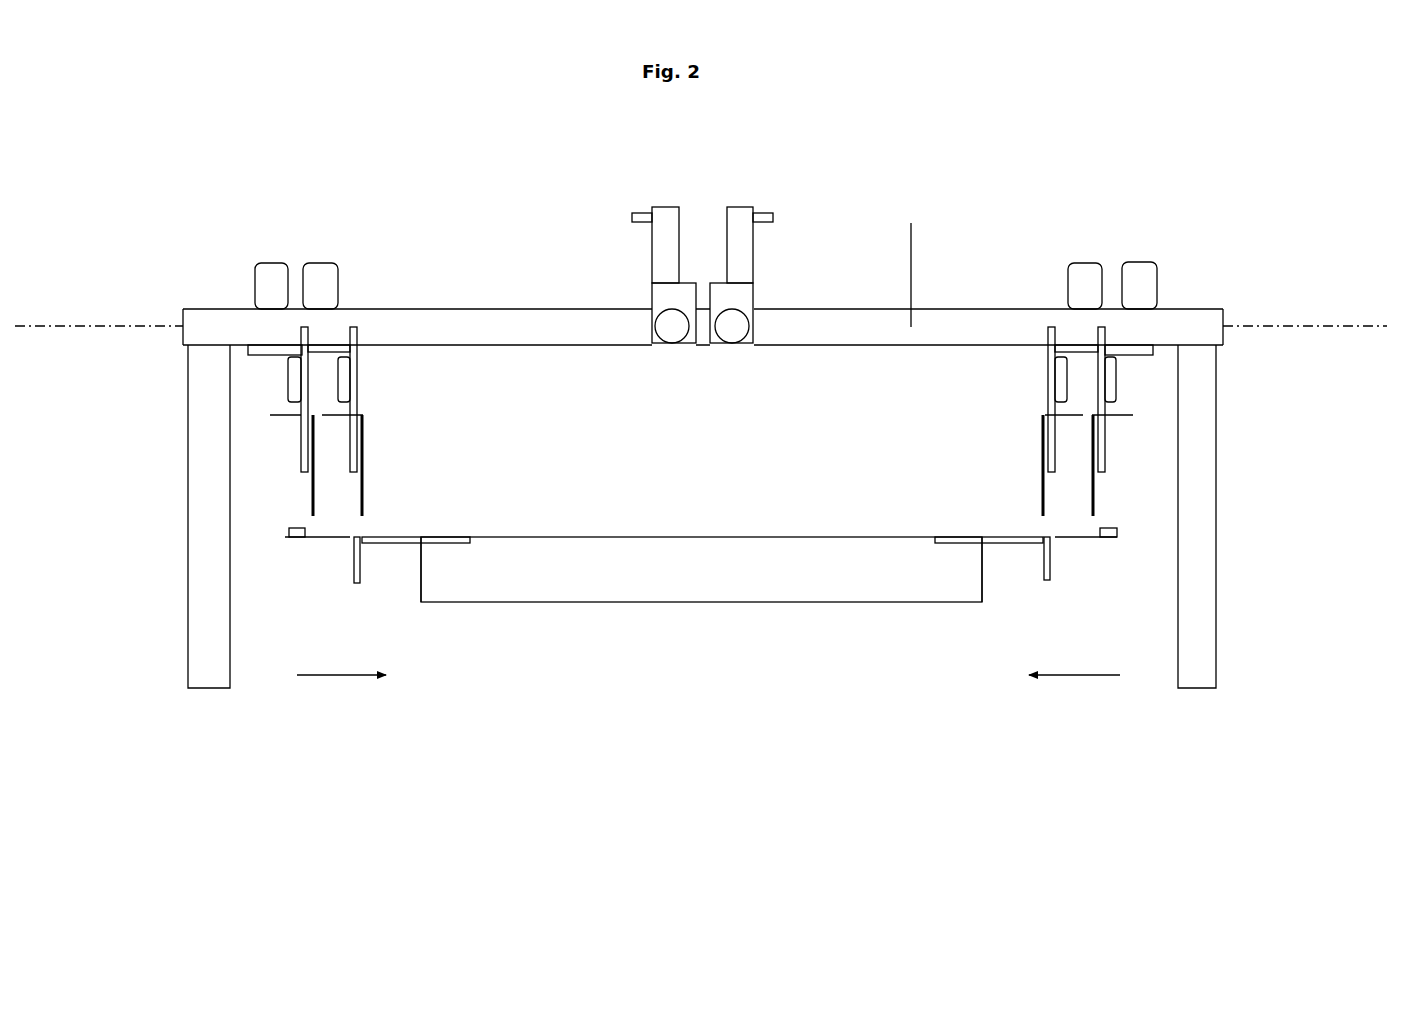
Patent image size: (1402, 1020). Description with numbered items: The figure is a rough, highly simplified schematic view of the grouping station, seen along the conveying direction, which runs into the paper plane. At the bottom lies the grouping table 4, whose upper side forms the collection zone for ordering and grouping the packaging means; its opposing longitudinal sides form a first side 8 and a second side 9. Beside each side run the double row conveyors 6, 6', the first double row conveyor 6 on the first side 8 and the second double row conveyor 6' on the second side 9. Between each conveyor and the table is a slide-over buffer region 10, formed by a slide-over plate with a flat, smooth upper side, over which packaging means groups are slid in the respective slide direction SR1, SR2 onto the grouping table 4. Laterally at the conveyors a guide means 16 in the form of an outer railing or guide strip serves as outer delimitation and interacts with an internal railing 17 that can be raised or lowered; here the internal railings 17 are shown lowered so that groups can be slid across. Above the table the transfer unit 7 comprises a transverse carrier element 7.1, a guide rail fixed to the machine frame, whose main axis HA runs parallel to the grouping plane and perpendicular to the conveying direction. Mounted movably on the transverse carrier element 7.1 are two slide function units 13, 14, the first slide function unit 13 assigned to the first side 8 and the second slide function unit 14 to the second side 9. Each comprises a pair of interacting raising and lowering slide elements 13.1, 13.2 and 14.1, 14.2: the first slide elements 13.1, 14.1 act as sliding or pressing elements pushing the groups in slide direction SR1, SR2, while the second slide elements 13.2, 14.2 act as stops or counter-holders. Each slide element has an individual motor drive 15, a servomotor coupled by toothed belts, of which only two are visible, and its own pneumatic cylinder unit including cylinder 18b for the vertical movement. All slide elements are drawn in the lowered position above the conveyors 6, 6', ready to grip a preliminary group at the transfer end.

The grouping table 4 is at (714, 581).
The first double row conveyor 6 is at (317, 565).
The second double row conveyor 6' is at (1086, 566).
The transfer unit 7 is at (434, 272).
The transverse carrier element 7.1 is at (910, 265).
The first side 8 is at (417, 586).
The second side 9 is at (989, 586).
The slide-over buffer region 10 is at (400, 540).
The first slide function unit 13 is at (376, 421).
The first slide element 13.1 is at (305, 429).
The second slide element 13.2 is at (357, 431).
The second slide function unit 14 is at (1005, 426).
The first slide element 14.1 is at (1105, 447).
The second slide element 14.2 is at (1045, 434).
The motor drive 15 is at (660, 232).
The guide means 16 is at (296, 537).
The internal railing 17 is at (357, 560).
The cylinder 18b is at (265, 288).
The main axis HA is at (701, 317).
The slide direction SR1 is at (341, 657).
The slide direction SR2 is at (1074, 659).